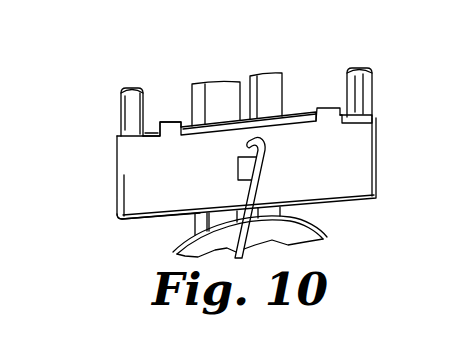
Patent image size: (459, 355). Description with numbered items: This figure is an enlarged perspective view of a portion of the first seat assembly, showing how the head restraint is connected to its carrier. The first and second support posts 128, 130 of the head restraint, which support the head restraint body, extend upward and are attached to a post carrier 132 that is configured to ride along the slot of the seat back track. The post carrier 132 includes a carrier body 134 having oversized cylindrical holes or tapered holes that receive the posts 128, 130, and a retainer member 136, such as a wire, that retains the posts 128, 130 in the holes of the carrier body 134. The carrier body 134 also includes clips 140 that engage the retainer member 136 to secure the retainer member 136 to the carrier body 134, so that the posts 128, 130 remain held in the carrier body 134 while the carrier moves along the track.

The first support post 128 is at (126, 117).
The second support post 130 is at (367, 94).
The post carrier 132 is at (123, 192).
The carrier body 134 is at (118, 212).
The retainer member 136 is at (152, 121).
The clips 140 is at (170, 118).